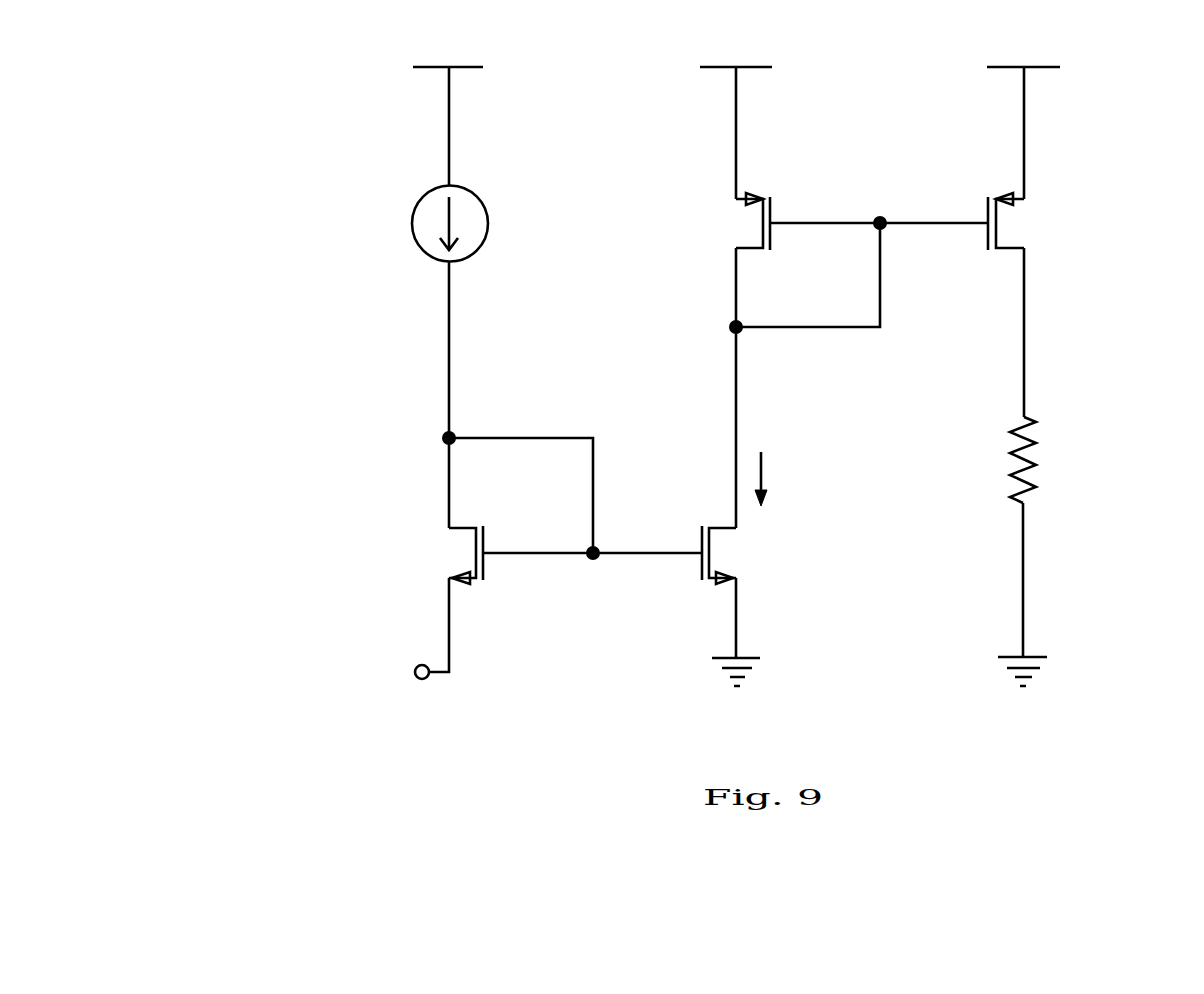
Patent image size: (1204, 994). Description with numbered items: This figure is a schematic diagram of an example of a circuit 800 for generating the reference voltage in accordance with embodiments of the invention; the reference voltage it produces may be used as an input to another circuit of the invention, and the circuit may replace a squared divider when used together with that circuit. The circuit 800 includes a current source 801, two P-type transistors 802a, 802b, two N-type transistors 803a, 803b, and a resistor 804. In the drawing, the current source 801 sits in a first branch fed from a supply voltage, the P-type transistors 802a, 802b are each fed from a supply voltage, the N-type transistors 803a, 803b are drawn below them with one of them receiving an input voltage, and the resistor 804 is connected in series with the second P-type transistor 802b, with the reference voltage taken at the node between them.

The circuit 800 is at (313, 110).
The current source 801 is at (412, 220).
The P-type transistor 802a is at (752, 230).
The P-type transistor 802b is at (1008, 230).
The N-type transistor 803a is at (462, 553).
The N-type transistor 803b is at (722, 553).
The resistor 804 is at (1010, 432).